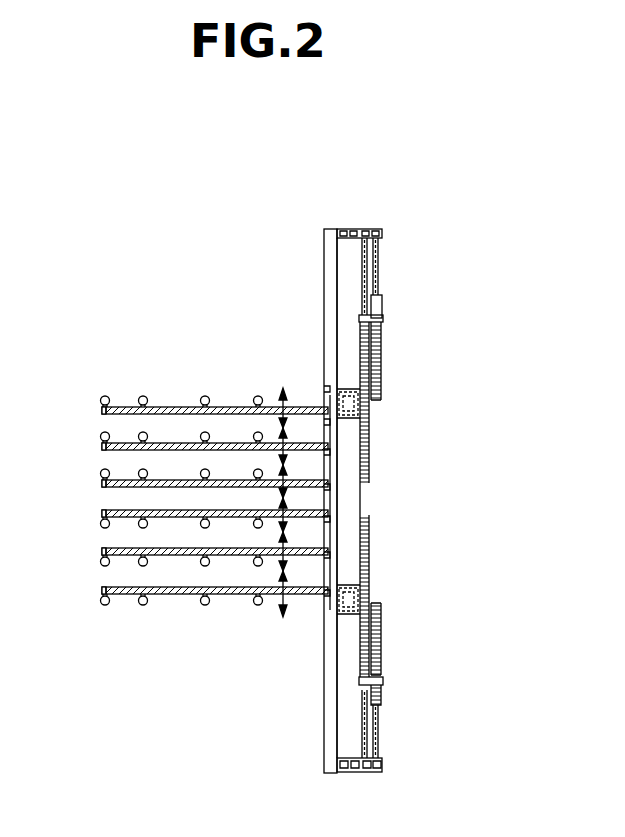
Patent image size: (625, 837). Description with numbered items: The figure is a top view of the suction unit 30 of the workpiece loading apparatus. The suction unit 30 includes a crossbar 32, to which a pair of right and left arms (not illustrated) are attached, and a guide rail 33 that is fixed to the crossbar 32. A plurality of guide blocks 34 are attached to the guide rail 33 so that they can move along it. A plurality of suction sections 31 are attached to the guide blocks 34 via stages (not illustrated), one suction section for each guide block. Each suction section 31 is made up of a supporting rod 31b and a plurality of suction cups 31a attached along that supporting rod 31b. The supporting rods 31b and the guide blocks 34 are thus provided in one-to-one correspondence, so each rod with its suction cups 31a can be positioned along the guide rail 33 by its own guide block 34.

The suction unit 30 is at (473, 330).
The suction section 31 is at (124, 405).
The suction cup 31a is at (143, 607).
The supporting rod 31b is at (175, 406).
The crossbar 32 is at (341, 229).
The guide rail 33 is at (324, 243).
The guide block 34 is at (324, 392).